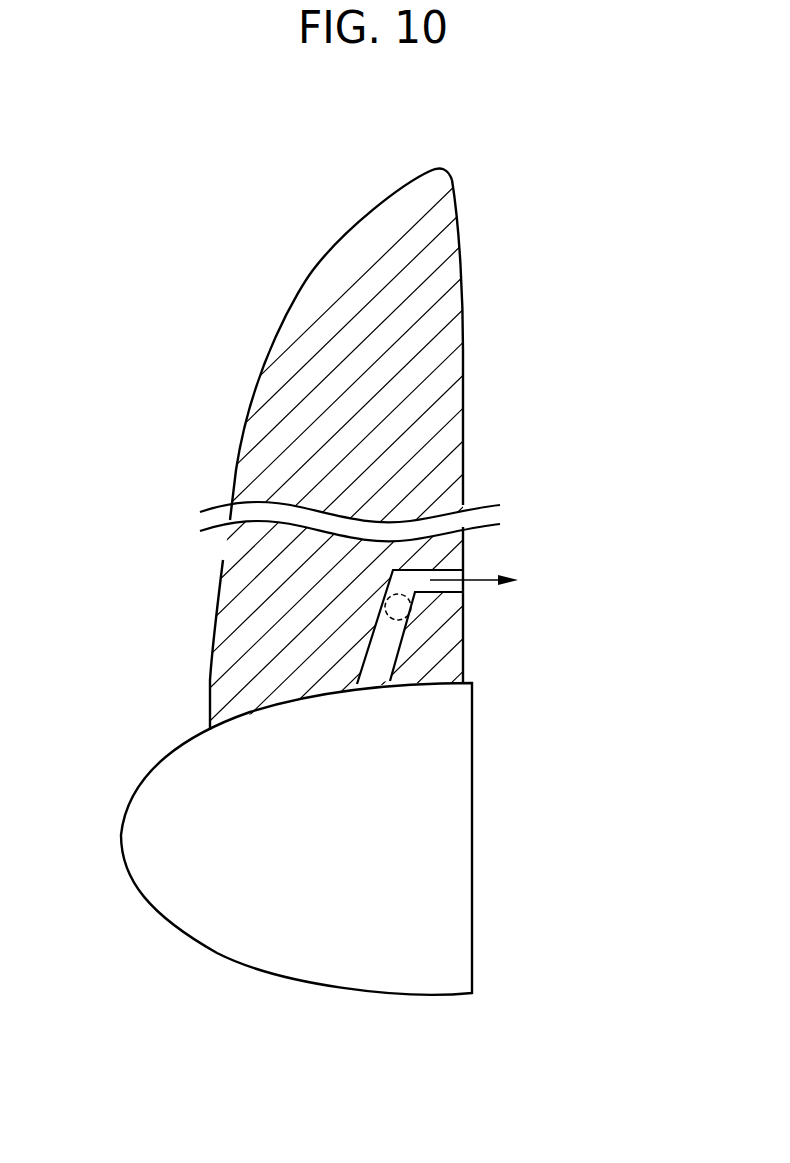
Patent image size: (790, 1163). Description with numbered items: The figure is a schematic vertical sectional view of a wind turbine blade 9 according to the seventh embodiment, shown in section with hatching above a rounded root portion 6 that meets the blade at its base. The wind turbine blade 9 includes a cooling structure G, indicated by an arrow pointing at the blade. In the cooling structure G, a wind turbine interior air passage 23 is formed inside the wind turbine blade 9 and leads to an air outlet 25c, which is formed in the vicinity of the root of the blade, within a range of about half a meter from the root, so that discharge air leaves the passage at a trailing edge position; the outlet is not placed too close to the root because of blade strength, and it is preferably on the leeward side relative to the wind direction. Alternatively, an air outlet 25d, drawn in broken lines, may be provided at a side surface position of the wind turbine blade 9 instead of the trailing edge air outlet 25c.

The cooling structure G is at (393, 662).
The wind turbine blade 9 is at (431, 662).
The platform 6 is at (142, 782).
The wind turbine interior air passage 23 is at (387, 653).
The air outlet 25c is at (460, 575).
The air outlet 25d is at (412, 607).